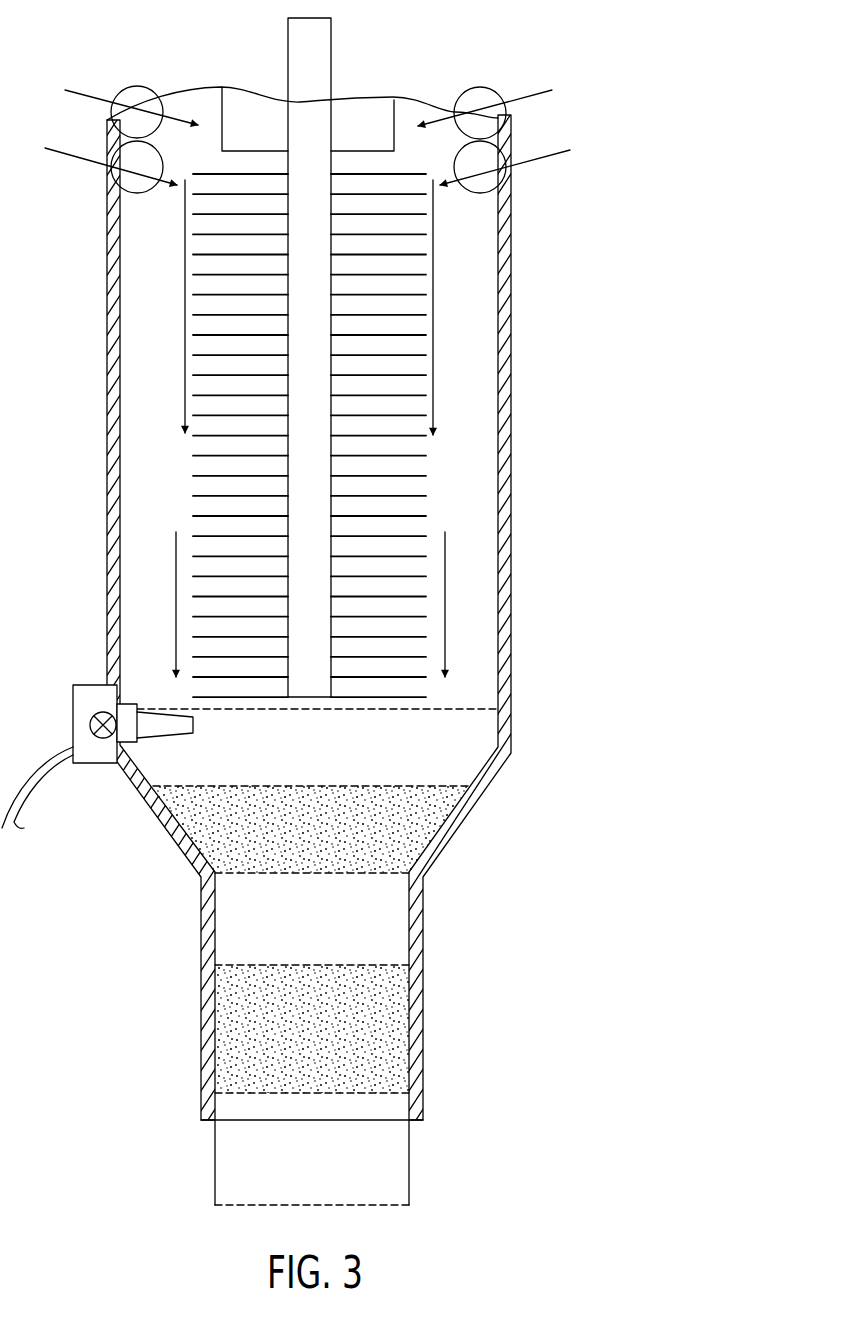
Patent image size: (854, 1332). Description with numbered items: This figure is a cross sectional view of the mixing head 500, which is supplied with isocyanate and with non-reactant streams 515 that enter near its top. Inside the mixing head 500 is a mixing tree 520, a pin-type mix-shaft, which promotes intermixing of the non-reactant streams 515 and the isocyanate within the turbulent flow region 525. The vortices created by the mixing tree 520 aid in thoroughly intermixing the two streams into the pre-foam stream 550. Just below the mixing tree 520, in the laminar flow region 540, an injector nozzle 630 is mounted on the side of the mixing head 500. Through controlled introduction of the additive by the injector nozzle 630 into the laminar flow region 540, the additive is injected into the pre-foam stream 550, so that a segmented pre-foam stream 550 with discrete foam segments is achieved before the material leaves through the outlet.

The mixing head 500 is at (400, 65).
The non-reactant streams 515 is at (97, 97).
The mixing tree 520 is at (330, 345).
The turbulent flow region 525 is at (208, 332).
The pre-foam stream 550 is at (450, 495).
The laminar flow region 540 is at (435, 755).
The injector nozzle 630 is at (62, 707).